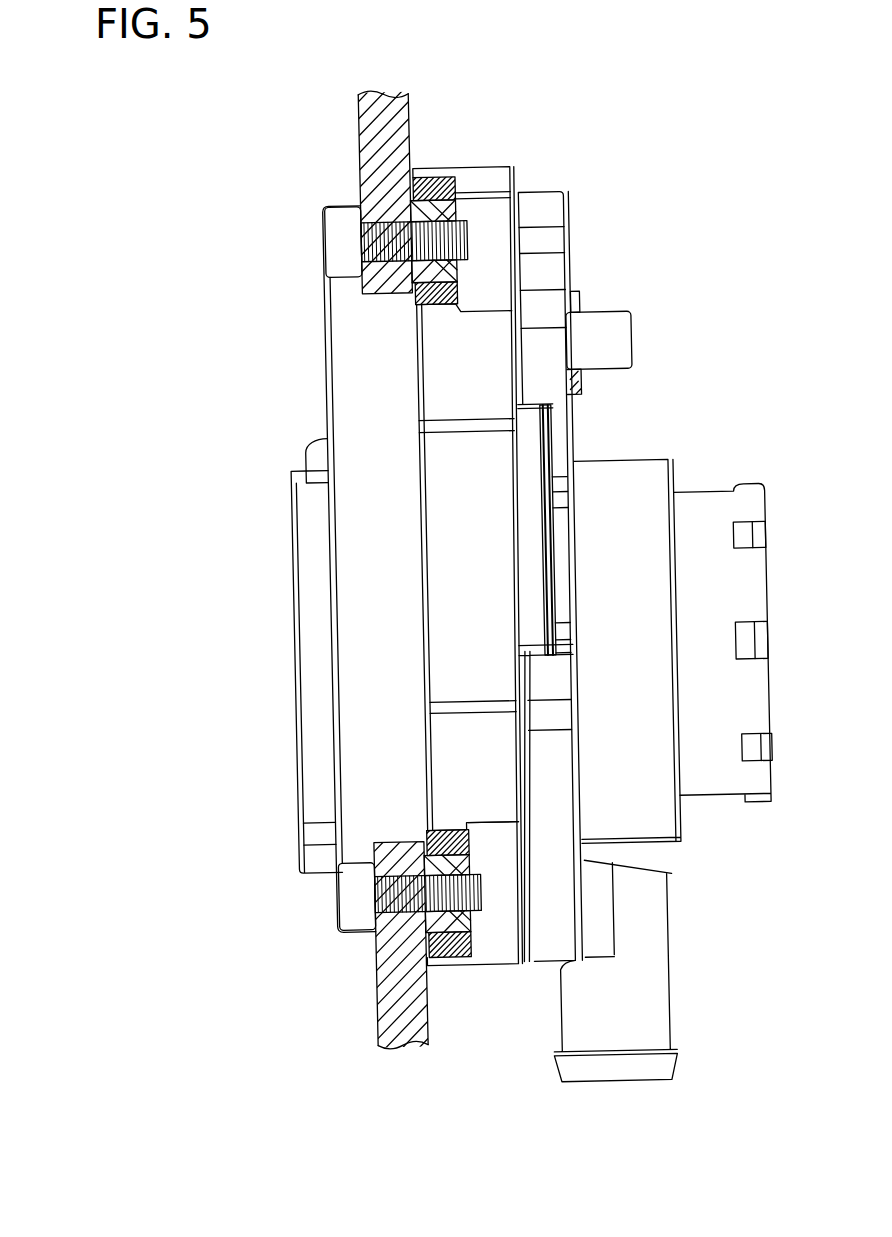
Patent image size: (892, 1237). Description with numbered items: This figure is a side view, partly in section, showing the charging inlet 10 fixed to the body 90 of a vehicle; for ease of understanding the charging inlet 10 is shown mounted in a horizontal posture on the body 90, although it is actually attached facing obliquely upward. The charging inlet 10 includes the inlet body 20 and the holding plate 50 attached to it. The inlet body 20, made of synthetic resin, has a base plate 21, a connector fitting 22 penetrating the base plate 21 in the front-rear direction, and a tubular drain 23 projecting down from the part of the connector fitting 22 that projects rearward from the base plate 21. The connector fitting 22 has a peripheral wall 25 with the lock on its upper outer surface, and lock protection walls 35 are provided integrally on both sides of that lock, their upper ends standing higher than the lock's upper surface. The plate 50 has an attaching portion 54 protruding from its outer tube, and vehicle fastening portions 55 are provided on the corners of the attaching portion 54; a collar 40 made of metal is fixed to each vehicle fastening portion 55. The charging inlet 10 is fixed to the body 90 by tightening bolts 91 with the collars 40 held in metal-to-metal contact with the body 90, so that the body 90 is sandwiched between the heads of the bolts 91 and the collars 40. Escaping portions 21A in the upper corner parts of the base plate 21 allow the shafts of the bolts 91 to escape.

The charging inlet 10 is at (459, 82).
The inlet body 20 is at (604, 166).
The base plate 21 is at (543, 203).
The escaping portion 21A is at (554, 240).
The connector fitting 22 is at (293, 543).
The tubular drain 23 is at (606, 1070).
The peripheral wall 25 is at (309, 710).
The lock protection wall 35 is at (320, 438).
The collar 40 is at (457, 212).
The holding plate 50 is at (304, 184).
The attaching portion 54 is at (485, 167).
The vehicle fastening portion 55 is at (435, 175).
The body 90 is at (378, 158).
The bolt 91 is at (347, 243).